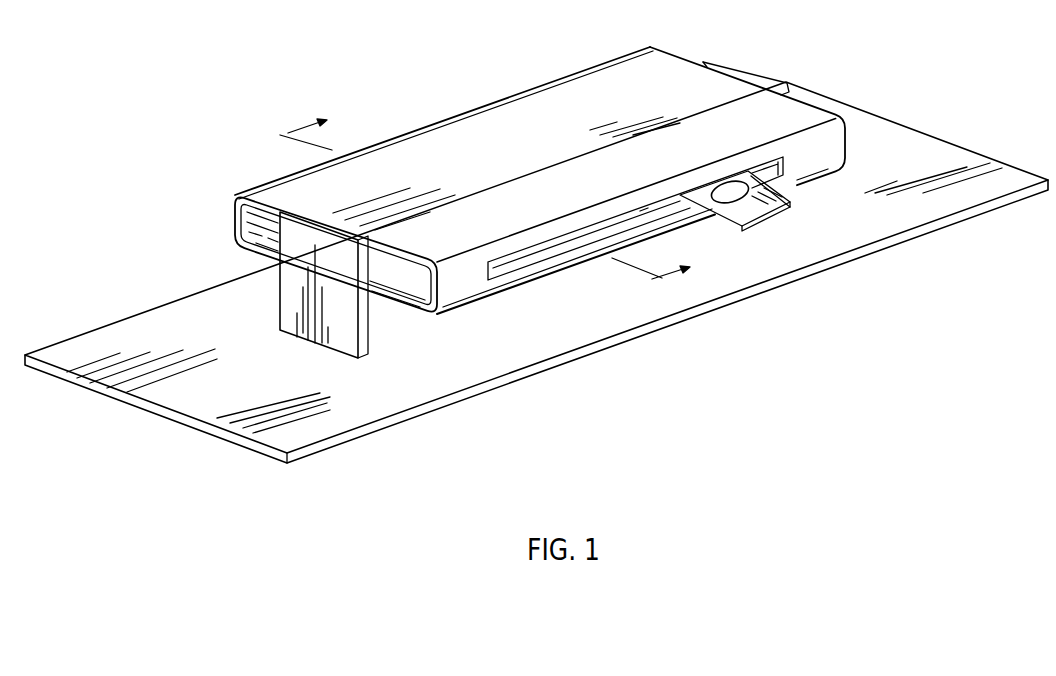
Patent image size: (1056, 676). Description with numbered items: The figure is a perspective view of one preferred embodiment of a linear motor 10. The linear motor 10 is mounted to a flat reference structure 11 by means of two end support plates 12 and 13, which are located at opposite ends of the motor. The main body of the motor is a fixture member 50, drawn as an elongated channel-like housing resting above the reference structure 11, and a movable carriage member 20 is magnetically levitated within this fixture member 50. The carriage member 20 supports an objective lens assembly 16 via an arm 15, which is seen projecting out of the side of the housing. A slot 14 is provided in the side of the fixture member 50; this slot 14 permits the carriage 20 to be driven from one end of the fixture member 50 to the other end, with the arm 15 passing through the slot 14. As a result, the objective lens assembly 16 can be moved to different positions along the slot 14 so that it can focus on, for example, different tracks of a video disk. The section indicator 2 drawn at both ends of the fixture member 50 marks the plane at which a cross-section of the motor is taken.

The linear motor 10 is at (536, 249).
The reference structure 11 is at (473, 369).
The end support plate 12 is at (292, 320).
The end support plate 13 is at (763, 80).
The slot 14 is at (528, 257).
The arm 15 is at (759, 217).
The objective lens assembly 16 is at (716, 186).
The movable carriage member 20 is at (640, 211).
The fixture member 50 is at (530, 98).
The section line 2- 2 is at (495, 189).